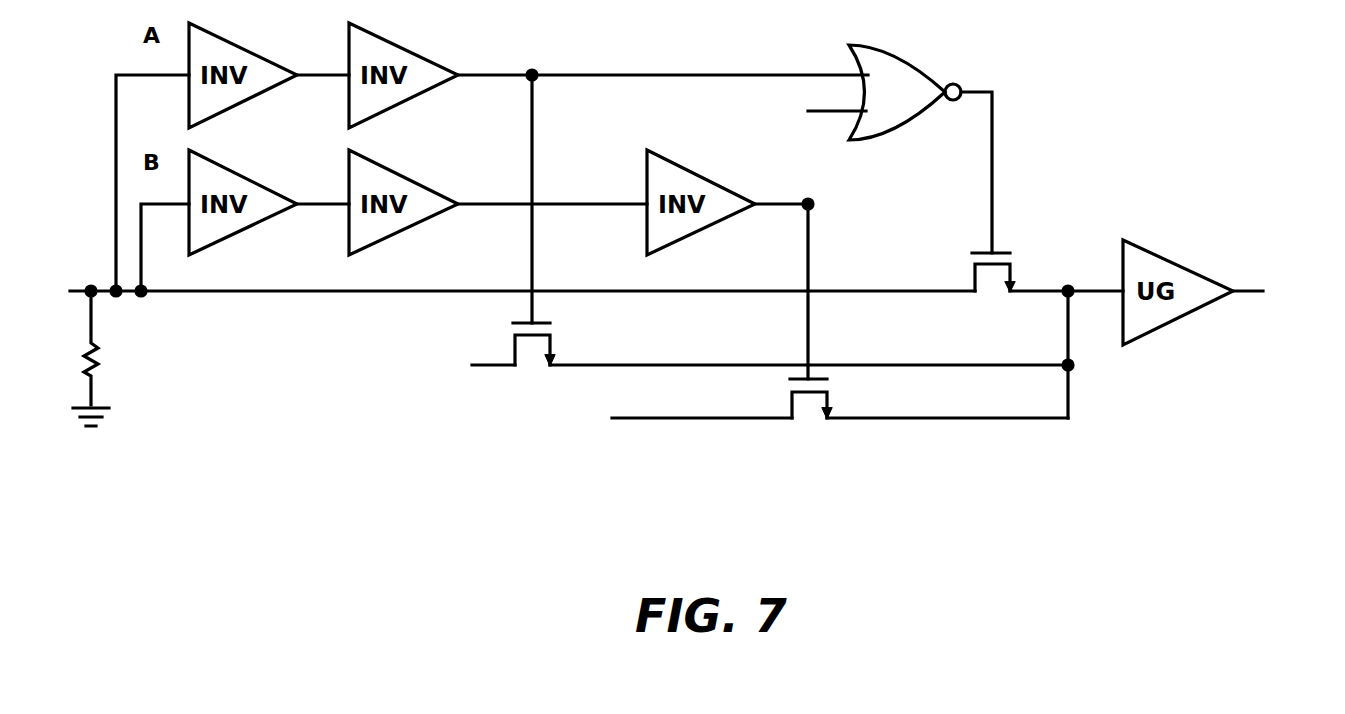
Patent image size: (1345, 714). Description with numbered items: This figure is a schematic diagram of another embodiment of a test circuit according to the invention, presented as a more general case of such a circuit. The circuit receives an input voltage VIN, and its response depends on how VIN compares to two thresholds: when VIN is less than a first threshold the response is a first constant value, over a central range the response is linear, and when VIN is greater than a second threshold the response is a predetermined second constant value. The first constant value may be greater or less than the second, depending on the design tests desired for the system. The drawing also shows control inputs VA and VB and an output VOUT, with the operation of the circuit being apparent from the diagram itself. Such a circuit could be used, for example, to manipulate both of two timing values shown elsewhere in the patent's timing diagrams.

The input voltage VIN is at (60, 281).
The control voltage A terminal VA is at (462, 355).
The control voltage B terminal VB is at (602, 408).
The output voltage terminal VOUT is at (1275, 280).